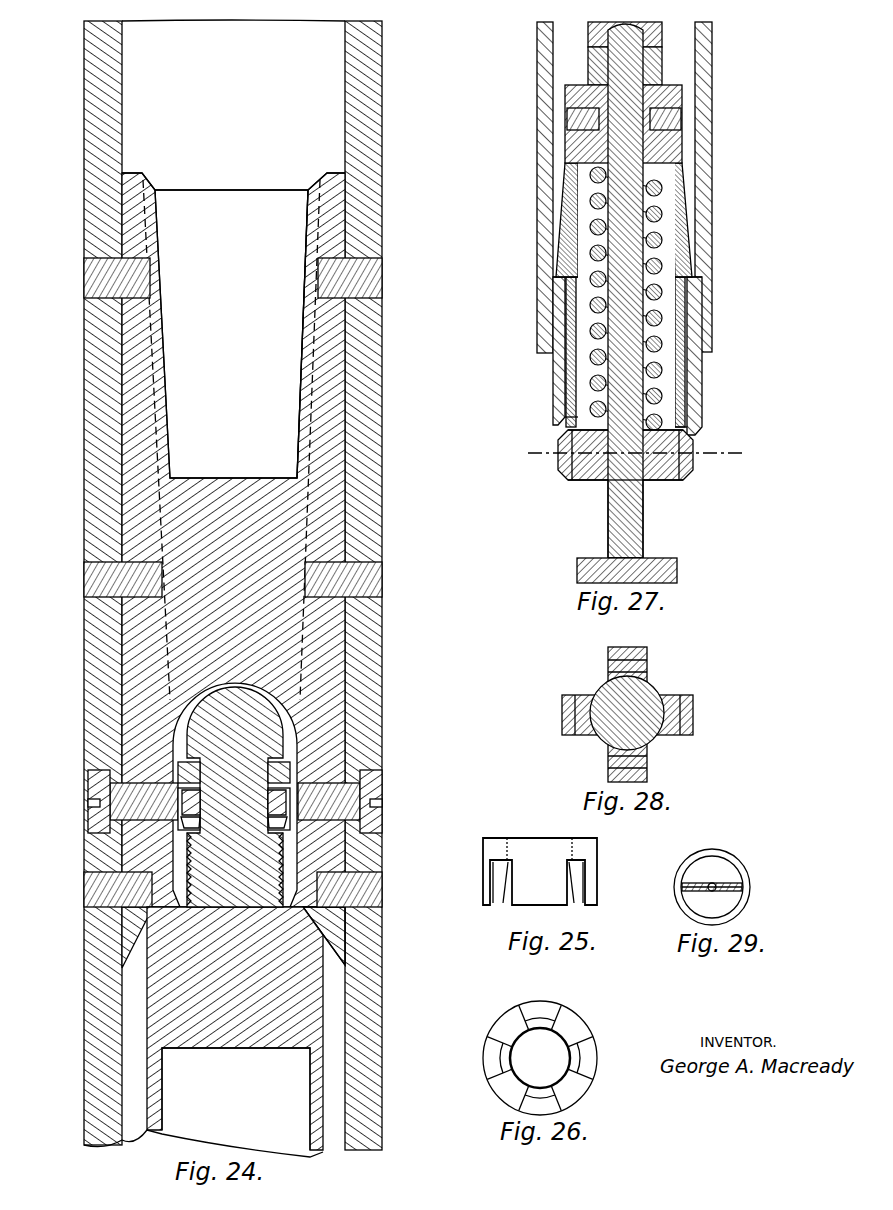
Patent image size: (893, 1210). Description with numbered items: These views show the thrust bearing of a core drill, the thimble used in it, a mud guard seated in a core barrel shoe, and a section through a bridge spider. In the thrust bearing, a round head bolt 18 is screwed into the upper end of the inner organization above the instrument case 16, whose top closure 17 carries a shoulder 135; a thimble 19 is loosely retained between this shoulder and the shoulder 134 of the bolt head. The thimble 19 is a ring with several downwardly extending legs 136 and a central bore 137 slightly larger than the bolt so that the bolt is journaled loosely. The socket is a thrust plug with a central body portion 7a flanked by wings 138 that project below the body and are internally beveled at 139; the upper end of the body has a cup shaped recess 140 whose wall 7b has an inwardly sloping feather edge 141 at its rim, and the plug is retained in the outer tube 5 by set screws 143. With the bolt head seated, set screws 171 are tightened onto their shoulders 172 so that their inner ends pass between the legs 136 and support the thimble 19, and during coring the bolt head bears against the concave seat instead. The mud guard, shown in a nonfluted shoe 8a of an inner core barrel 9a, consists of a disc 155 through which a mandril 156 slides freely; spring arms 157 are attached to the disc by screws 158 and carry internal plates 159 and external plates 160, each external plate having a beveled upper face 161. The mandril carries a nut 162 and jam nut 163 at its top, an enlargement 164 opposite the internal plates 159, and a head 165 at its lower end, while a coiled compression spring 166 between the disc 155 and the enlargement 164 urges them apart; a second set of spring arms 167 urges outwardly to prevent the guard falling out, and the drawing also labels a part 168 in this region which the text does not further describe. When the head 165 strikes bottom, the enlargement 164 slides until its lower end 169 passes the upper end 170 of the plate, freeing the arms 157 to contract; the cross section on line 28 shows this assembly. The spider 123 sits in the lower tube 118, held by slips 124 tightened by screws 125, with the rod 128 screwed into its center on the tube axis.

In FIG. 24, the tube 5 is at (368, 110).
In FIG. 24, the central body portion 7a is at (280, 522).
In FIG. 24, the wall 7b is at (305, 312).
In FIG. 24, the case 16 is at (315, 1080).
In FIG. 24, the top closure 17 is at (310, 985).
In FIG. 24, the thrust bearing bolt 18 is at (270, 712).
In FIG. 24, the thimble 19 is at (282, 776).
In FIG. 26, the thimble 19 is at (572, 1028).
In FIG. 24, the shoulder of the bolt head 134 is at (285, 747).
In FIG. 24, the shoulder of the instrument case top 135 is at (288, 832).
In FIG. 24, the wings 138 is at (330, 452).
In FIG. 24, the internal bevel 139 is at (335, 940).
In FIG. 24, the cup shaped recess 140 is at (231, 334).
In FIG. 24, the feather edge 141 is at (326, 180).
In FIG. 24, the set screws 143 is at (84, 268).
In FIG. 24, the set screws 171 is at (384, 790).
In FIG. 24, the shoulders 172 is at (365, 821).
In FIG. 27, the inner core barrel 9a is at (703, 168).
In FIG. 27, the shoe 8a is at (703, 347).
In FIG. 27, the disc 155 is at (668, 86).
In FIG. 27, the mandril 156 is at (635, 200).
In FIG. 27, the spring arms 157 is at (680, 295).
In FIG. 28, the spring arms 157 is at (680, 700).
In FIG. 27, the screws 158 is at (682, 122).
In FIG. 27, the internal plates 159 is at (655, 484).
In FIG. 28, the internal plates 159 is at (645, 673).
In FIG. 27, the external plates 160 is at (680, 470).
In FIG. 28, the external plates 160 is at (640, 650).
In FIG. 27, the bevel 161 is at (670, 440).
In FIG. 27, the nut 162 is at (650, 60).
In FIG. 27, the jam nut 163 is at (665, 35).
In FIG. 27, the enlargement 164 is at (612, 472).
In FIG. 28, the enlargement 164 is at (660, 738).
In FIG. 27, the head 165 is at (677, 566).
In FIG. 27, the coiled compression spring 166 is at (655, 315).
In FIG. 27, the second set of spring arms 167 is at (692, 240).
In FIG. 27, the shoulder 168 is at (702, 265).
In FIG. 27, the lower end 169 is at (650, 486).
In FIG. 27, the upper end of the plate 170 is at (688, 420).
In FIG. 27, the line 28— 28 is at (633, 454).
In FIG. 25, the legs 136 is at (590, 903).
In FIG. 26, the legs 136 is at (545, 1010).
In FIG. 25, the central bore 137 is at (535, 838).
In FIG. 26, the central bore 137 is at (540, 1058).
In FIG. 29, the lower tube 118 is at (745, 900).
In FIG. 29, the spider 123 is at (732, 870).
In FIG. 29, the slips 124 is at (745, 887).
In FIG. 29, the screws 125 is at (712, 885).
In FIG. 29, the rod 128 is at (716, 893).